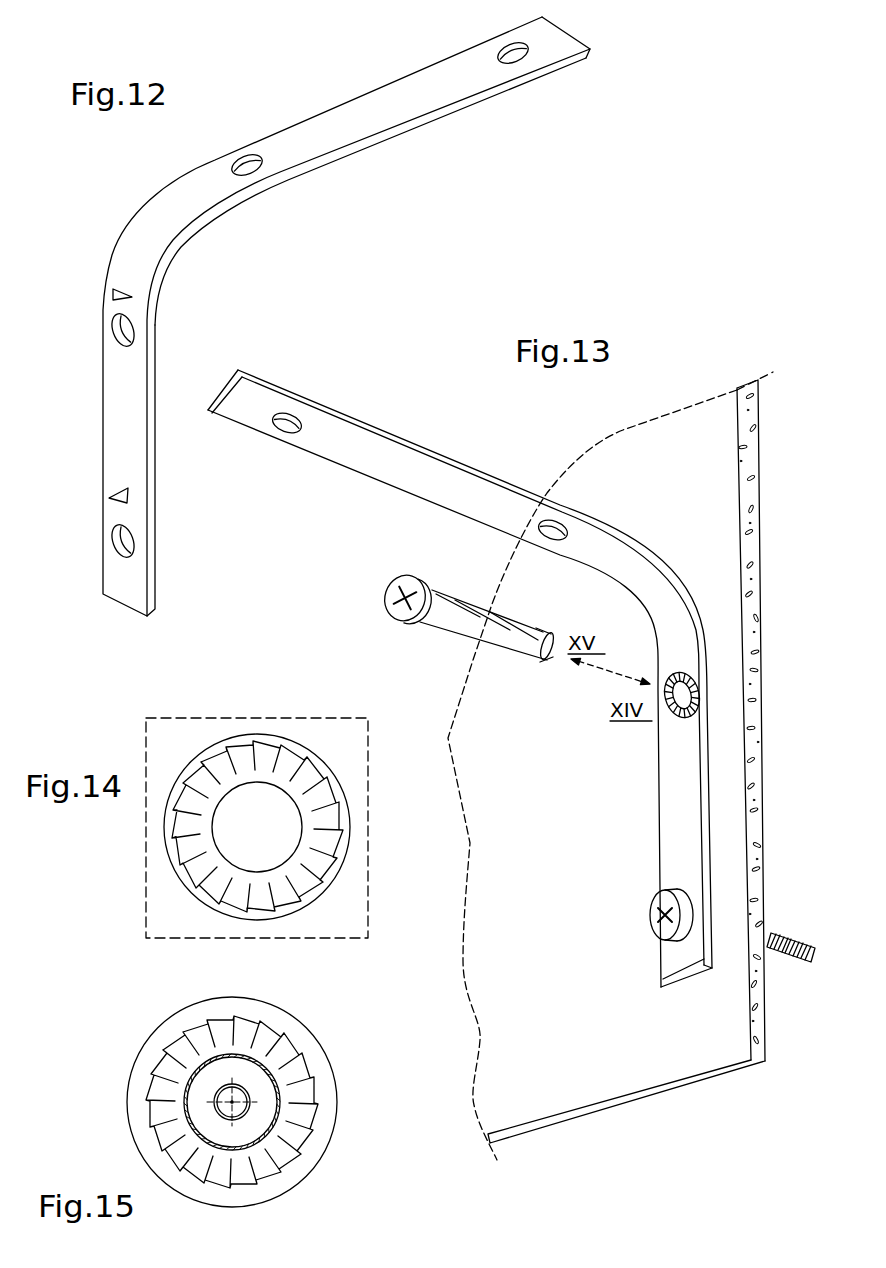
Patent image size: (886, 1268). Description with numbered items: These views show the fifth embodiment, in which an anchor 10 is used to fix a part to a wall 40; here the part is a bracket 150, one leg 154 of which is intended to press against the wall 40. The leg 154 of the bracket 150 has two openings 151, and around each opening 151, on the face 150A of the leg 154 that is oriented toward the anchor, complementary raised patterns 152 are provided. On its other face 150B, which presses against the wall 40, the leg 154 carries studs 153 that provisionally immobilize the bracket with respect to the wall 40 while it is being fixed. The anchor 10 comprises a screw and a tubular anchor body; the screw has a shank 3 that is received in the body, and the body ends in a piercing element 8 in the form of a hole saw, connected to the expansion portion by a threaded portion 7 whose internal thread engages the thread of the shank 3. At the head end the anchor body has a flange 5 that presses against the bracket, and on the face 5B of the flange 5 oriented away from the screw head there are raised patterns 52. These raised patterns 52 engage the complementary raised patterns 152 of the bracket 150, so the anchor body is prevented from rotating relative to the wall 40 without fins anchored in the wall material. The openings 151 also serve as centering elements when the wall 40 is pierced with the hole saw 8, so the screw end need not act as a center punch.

In FIG. 12, the bracket 150 is at (320, 85).
In FIG. 13, the bracket 150 is at (462, 437).
In FIG. 14, the bracket 150 is at (335, 735).
In FIG. 12, the face of the leg 150A is at (158, 453).
In FIG. 13, the face of the leg 150A is at (657, 960).
In FIG. 14, the face of the leg 150A is at (160, 912).
In FIG. 12, the face of the leg 150B is at (123, 592).
In FIG. 13, the face of the leg 150B is at (724, 947).
In FIG. 12, the opening 151 is at (112, 331).
In FIG. 14, the opening 151 is at (258, 799).
In FIG. 13, the raised patterns 152 is at (677, 672).
In FIG. 14, the raised patterns 152 is at (293, 893).
In FIG. 12, the studs 153 is at (123, 291).
In FIG. 12, the leg 154 is at (112, 414).
In FIG. 13, the leg 154 is at (673, 783).
In FIG. 13, the anchor 10 is at (375, 607).
In FIG. 13, the wall 40 is at (742, 420).
In FIG. 15, the flange 5 is at (190, 1017).
In FIG. 15, the face of the flange 5B is at (322, 1066).
In FIG. 15, the shank 3 is at (215, 1087).
In FIG. 15, the threaded portion 7 is at (265, 1093).
In FIG. 15, the piercing element 8 is at (170, 1100).
In FIG. 15, the raised patterns 52 is at (283, 1155).